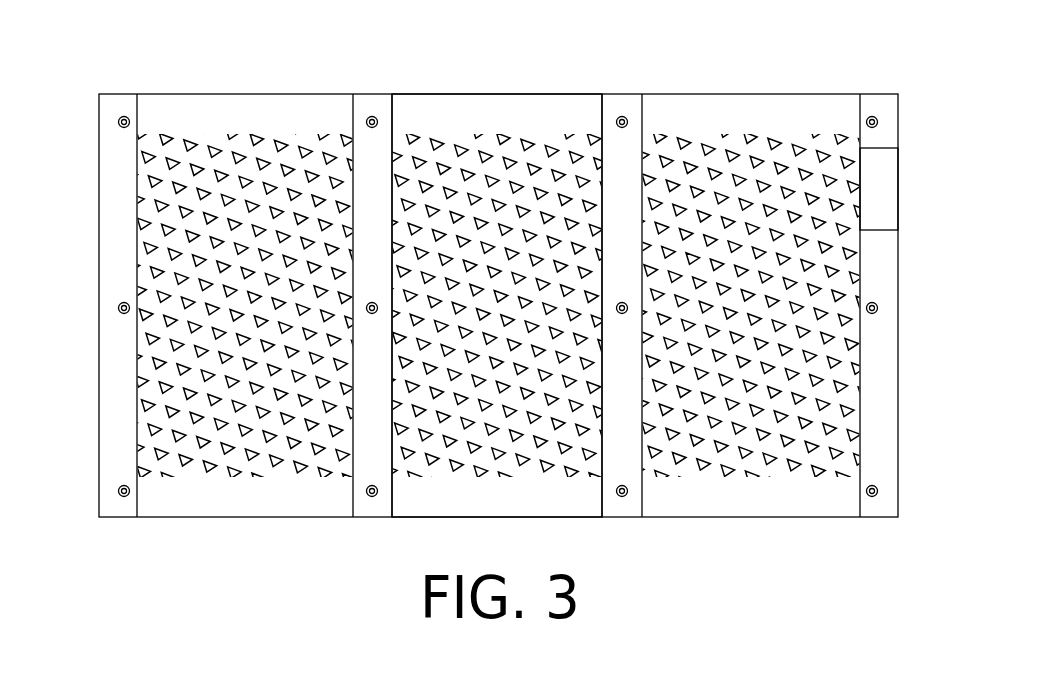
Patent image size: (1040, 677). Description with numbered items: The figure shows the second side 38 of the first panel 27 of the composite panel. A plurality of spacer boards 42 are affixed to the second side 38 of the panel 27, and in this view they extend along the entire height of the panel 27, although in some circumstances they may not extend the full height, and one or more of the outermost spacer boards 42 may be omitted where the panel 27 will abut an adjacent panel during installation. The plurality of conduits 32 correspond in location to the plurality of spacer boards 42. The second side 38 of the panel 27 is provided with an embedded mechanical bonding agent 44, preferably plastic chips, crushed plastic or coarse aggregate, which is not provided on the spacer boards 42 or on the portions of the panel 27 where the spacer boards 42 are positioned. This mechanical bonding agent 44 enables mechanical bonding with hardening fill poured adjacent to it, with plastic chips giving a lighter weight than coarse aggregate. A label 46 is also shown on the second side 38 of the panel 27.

The first panel 27 is at (660, 52).
The conduits 32 is at (372, 302).
The second side 38 is at (510, 123).
The spacer boards 42 is at (105, 155).
The embedded mechanical bonding agent 44 is at (213, 152).
The label 46 is at (883, 141).